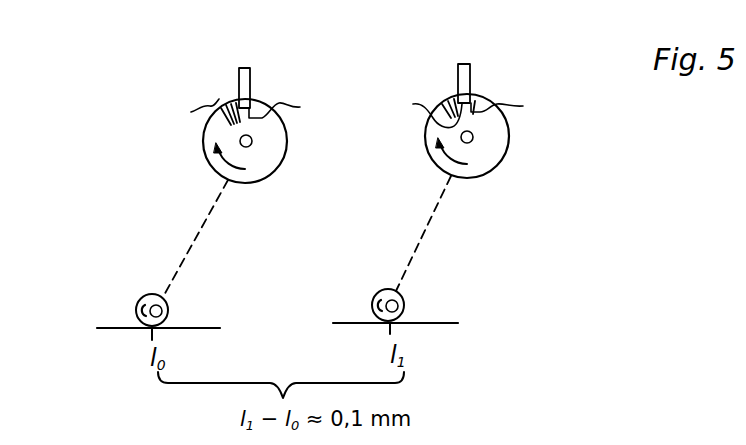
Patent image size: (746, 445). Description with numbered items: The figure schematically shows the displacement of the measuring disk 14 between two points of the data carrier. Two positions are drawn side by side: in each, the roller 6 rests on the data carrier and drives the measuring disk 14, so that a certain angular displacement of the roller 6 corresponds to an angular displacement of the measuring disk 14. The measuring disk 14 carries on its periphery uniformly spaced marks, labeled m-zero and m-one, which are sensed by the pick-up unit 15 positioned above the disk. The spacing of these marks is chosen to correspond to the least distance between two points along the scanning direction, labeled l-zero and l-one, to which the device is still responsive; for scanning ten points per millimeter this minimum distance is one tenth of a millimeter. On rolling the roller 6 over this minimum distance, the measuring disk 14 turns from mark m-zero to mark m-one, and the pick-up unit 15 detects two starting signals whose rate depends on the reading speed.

The roller 6 is at (168, 309).
The measuring disk 14 is at (287, 157).
The pick-up unit 15 is at (250, 74).